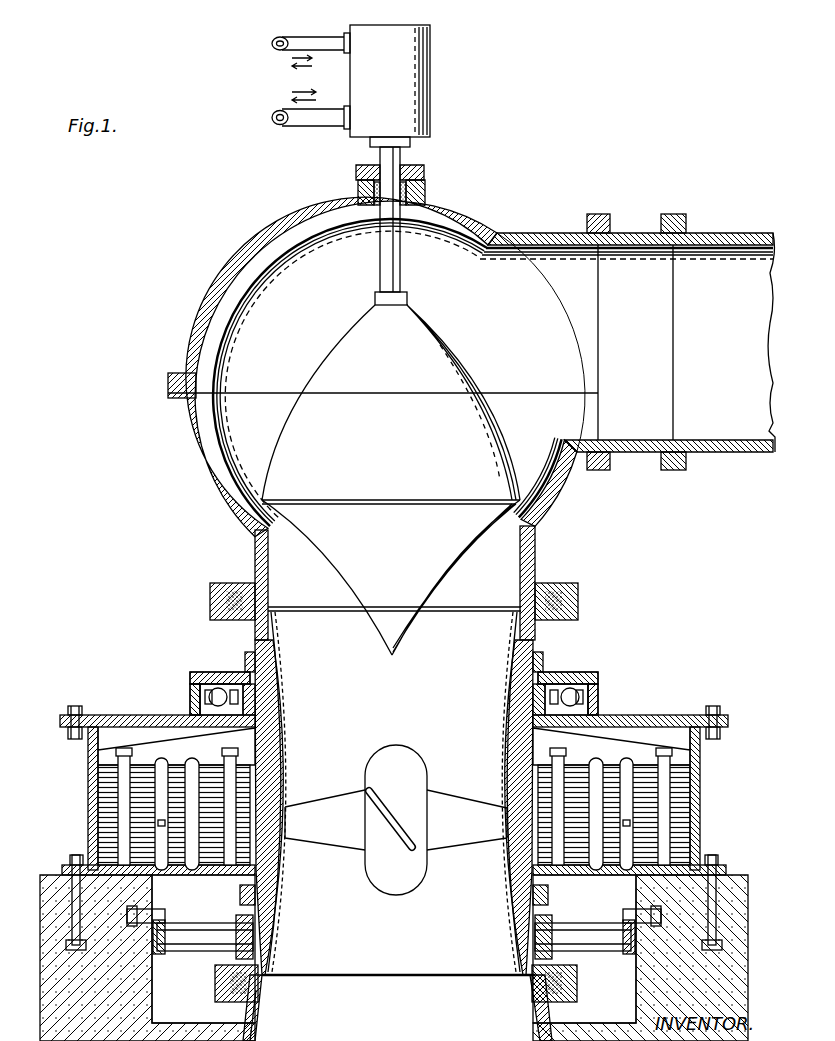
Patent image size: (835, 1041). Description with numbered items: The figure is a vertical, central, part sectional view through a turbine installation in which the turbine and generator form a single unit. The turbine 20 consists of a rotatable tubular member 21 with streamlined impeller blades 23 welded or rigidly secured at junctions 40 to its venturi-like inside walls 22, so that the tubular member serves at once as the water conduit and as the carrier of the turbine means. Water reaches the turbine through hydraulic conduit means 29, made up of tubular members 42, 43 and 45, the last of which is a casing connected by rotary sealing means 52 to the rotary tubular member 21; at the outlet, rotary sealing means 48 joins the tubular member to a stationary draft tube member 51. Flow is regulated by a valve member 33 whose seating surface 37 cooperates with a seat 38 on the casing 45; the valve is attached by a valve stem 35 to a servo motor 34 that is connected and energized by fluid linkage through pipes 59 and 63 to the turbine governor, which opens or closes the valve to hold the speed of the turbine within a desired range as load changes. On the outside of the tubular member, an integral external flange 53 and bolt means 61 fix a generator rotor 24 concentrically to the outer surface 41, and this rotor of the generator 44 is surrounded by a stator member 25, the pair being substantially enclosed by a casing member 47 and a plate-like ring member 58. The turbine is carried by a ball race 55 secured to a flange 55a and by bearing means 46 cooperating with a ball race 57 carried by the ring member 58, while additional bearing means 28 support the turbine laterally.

The turbine 20 is at (508, 966).
The rotatable tubular member 21 is at (485, 630).
The inside walls 22 is at (276, 700).
The impeller blades 23 is at (395, 842).
The generator rotor 24 is at (590, 772).
The stator member 25 is at (100, 803).
The bearing means 28 is at (205, 959).
The hydraulic conduit means 29 is at (725, 252).
The valve member 33 is at (455, 388).
The servo motor 34 is at (415, 123).
The valve stem 35 is at (400, 159).
The seating surface 37 is at (478, 504).
The seat 38 is at (255, 549).
The junctions 40 is at (295, 807).
The outer surface 41 is at (240, 758).
The tubular member 42 is at (612, 234).
The tubular member 43 is at (232, 287).
The generator 44 is at (116, 708).
The casing 45 is at (212, 470).
The bearing means 46 is at (192, 696).
The casing member 47 is at (88, 781).
The rotary sealing means 48 is at (215, 990).
The stationary draft tube member 51 is at (262, 1020).
The rotary sealing means 52 is at (578, 603).
The external flange 53 is at (240, 890).
The ball race 55 is at (205, 673).
The flange 55a is at (230, 672).
The ball race 57 is at (190, 704).
The plate-like ring member 58 is at (700, 716).
The pipe 59 is at (282, 111).
The bolt means 61 is at (280, 784).
The pipe 63 is at (306, 38).